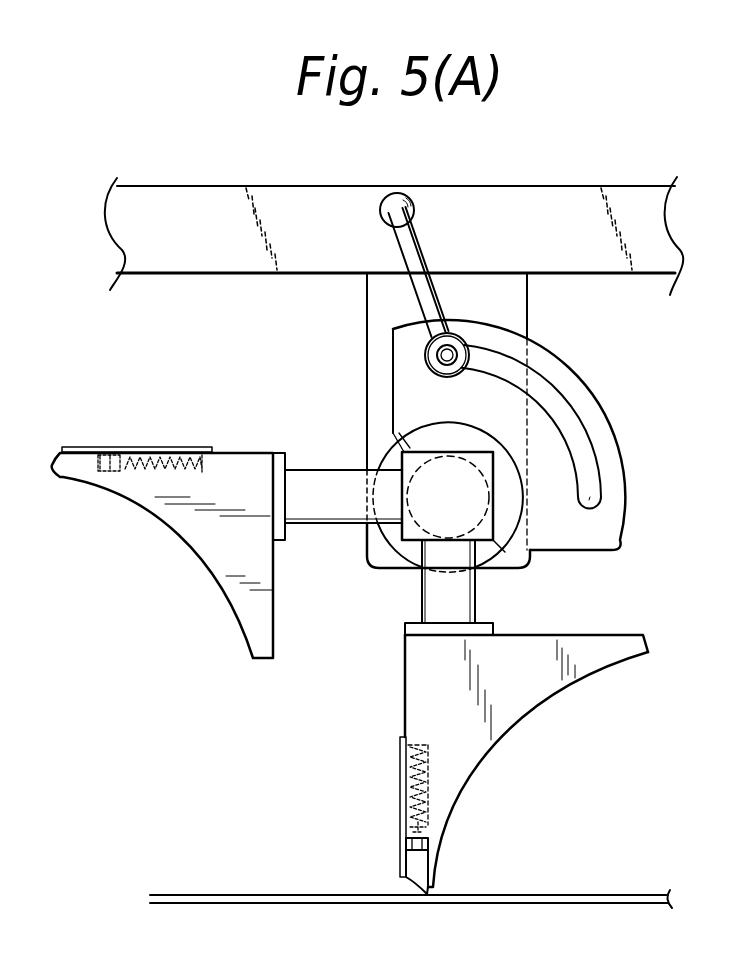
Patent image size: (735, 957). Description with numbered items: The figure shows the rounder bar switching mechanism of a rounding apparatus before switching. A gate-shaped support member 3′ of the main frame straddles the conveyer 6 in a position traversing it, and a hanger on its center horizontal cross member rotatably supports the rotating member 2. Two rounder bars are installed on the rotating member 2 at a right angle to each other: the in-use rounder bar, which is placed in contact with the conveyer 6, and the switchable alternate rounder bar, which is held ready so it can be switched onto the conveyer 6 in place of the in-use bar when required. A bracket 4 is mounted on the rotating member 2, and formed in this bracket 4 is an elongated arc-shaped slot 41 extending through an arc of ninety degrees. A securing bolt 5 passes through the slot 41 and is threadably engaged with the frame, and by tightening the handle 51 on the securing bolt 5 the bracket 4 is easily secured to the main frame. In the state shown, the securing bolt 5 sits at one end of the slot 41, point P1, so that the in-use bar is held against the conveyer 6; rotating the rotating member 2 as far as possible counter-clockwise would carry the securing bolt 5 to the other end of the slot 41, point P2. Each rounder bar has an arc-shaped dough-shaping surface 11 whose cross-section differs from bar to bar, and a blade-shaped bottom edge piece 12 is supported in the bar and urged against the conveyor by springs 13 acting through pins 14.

The support member 3′ is at (572, 252).
The bracket 4 is at (608, 522).
The elongated arc-shaped slot 41 is at (568, 412).
The point P2 is at (590, 505).
The handle 51 is at (413, 247).
The securing bolt 5 is at (426, 352).
The point P1 is at (447, 355).
The rotating member 2 is at (377, 553).
The dough-shaping surface 11 is at (567, 687).
The spring 13 is at (405, 760).
The pin 14 is at (405, 827).
The bottom edge piece 12 is at (410, 866).
The conveyer 6 is at (565, 895).